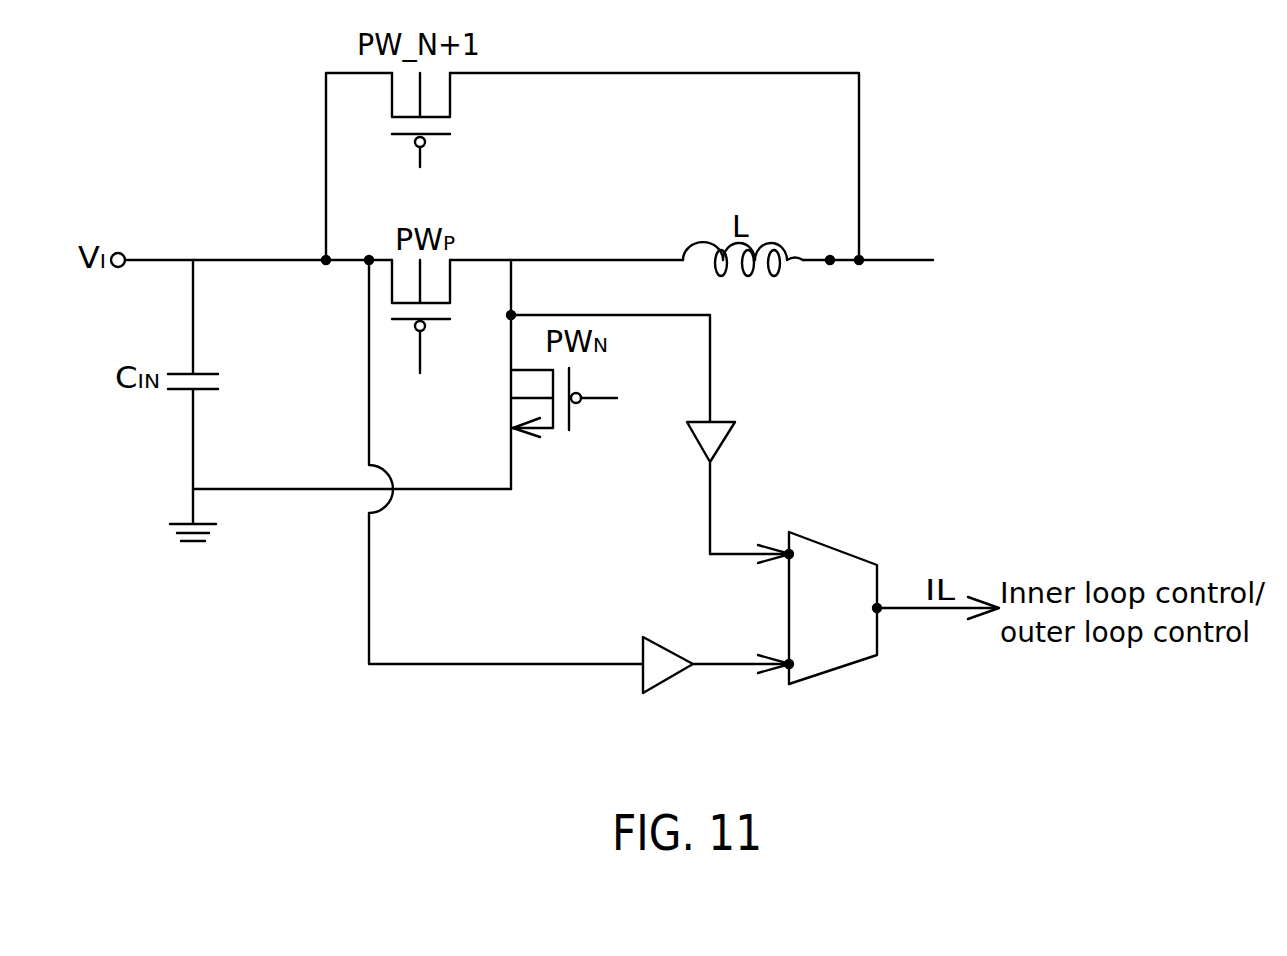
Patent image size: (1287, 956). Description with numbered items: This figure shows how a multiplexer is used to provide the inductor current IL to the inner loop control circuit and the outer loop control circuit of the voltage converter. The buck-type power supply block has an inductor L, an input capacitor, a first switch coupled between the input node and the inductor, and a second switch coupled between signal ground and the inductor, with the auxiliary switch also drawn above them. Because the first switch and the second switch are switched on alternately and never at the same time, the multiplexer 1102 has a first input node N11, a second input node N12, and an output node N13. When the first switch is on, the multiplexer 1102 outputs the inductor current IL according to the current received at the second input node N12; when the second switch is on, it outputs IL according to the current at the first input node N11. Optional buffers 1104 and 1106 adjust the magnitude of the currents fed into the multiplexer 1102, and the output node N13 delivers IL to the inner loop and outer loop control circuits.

The multiplexer 1102 is at (833, 547).
The buffer 1104 is at (697, 440).
The buffer 1106 is at (670, 648).
The first input node N11 is at (788, 553).
The second input node N12 is at (787, 667).
The output node N13 is at (880, 612).